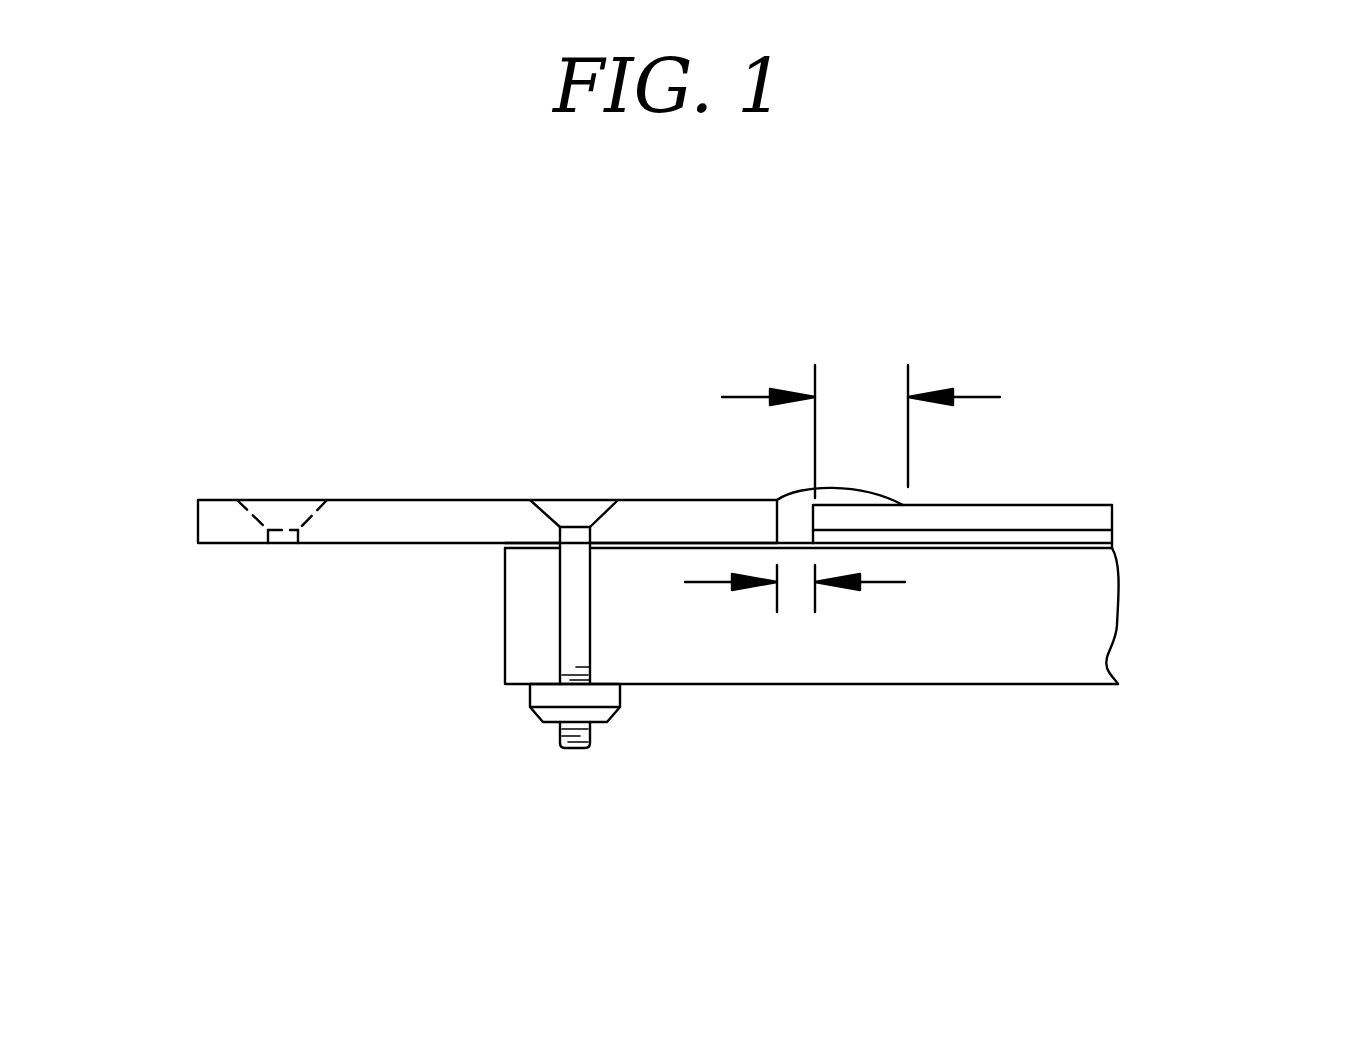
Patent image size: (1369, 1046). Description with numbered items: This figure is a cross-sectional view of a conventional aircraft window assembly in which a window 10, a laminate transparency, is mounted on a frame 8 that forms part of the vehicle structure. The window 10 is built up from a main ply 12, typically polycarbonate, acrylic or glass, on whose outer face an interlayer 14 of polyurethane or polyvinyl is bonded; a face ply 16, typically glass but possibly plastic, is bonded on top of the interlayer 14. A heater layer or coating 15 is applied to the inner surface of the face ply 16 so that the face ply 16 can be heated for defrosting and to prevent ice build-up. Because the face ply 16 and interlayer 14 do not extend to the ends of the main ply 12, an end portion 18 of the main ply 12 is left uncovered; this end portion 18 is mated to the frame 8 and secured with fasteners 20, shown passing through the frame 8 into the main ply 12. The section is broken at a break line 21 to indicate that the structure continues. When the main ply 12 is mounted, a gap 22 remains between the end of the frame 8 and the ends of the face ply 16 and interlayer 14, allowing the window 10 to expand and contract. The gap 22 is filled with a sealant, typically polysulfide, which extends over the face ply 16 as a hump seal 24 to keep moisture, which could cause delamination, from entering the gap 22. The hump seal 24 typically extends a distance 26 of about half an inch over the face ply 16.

The frame 8 is at (213, 519).
The window 10 is at (1138, 600).
The main ply 12 is at (1087, 650).
The interlayer 14 is at (1108, 547).
The heater layer 15 is at (1102, 538).
The face ply 16 is at (1078, 517).
The end portion 18 is at (502, 786).
The fasteners 20 is at (575, 621).
The break line 21 is at (653, 548).
The gap 22 is at (880, 581).
The hump seal 24 is at (843, 497).
The distance 26 is at (860, 395).